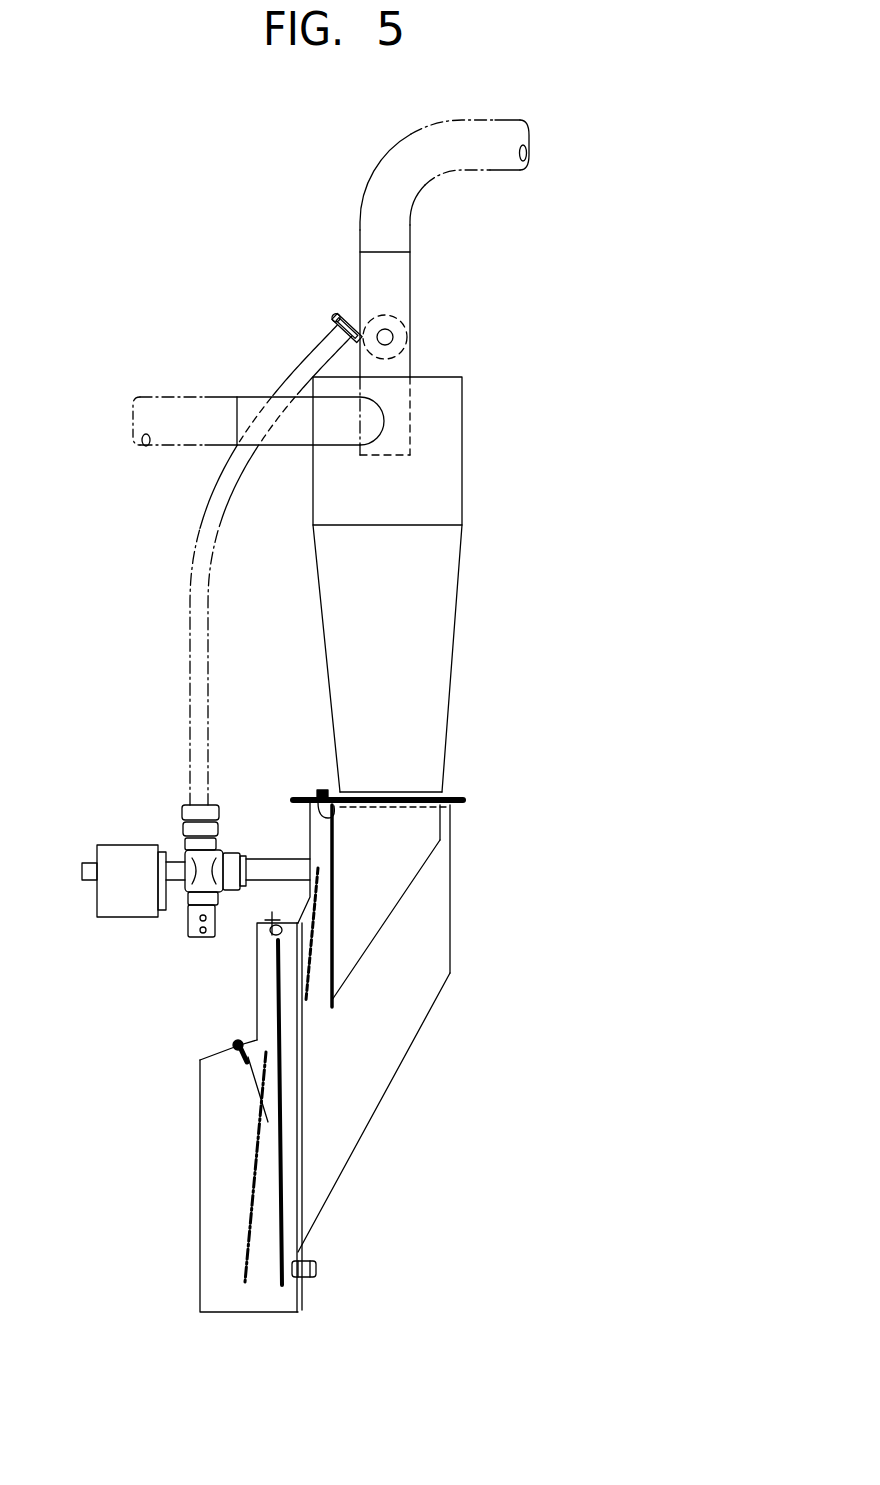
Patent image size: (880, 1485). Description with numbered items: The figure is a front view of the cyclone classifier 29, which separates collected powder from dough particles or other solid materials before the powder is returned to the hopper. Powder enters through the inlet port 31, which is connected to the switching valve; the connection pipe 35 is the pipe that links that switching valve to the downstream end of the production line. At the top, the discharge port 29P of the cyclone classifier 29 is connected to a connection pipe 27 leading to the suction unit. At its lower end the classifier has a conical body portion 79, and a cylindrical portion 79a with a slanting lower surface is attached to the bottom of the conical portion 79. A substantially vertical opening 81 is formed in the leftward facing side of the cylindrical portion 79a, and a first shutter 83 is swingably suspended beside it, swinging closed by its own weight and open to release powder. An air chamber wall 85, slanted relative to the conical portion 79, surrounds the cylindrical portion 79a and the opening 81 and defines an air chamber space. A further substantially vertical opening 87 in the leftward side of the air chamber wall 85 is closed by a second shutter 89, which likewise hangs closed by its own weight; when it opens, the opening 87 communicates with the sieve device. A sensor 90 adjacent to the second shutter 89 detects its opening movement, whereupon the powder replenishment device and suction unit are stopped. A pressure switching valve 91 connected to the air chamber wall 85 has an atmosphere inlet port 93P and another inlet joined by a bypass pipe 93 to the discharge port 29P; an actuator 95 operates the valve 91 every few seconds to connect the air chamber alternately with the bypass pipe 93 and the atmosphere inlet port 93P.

The connection pipe 27 is at (362, 198).
The discharge port 29P is at (400, 297).
The cyclone classifier 29 is at (466, 522).
The conical body portion 79 is at (453, 683).
The connection pipe 35 is at (178, 403).
The inlet port 31 is at (247, 397).
The bypass pipe 93 is at (190, 597).
The pressure switching valve 91 is at (188, 855).
The atmosphere inlet port 93P is at (195, 937).
The actuator 95 is at (118, 862).
The cylindrical portion 79a is at (392, 835).
The first shutter 83 is at (330, 890).
The opening 81 is at (355, 930).
The air chamber wall 85 is at (363, 1132).
The opening 87 is at (292, 1195).
The second shutter 89 is at (283, 1253).
The sensor 90 is at (236, 1044).